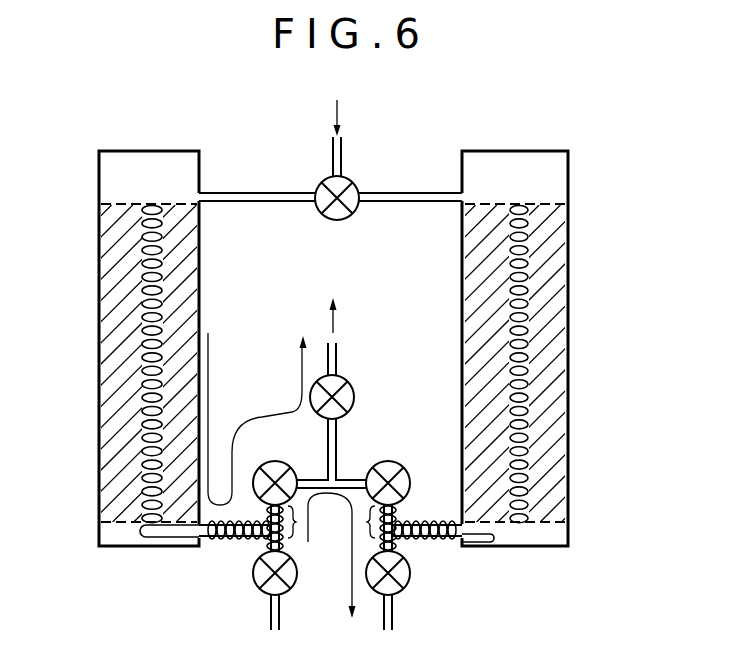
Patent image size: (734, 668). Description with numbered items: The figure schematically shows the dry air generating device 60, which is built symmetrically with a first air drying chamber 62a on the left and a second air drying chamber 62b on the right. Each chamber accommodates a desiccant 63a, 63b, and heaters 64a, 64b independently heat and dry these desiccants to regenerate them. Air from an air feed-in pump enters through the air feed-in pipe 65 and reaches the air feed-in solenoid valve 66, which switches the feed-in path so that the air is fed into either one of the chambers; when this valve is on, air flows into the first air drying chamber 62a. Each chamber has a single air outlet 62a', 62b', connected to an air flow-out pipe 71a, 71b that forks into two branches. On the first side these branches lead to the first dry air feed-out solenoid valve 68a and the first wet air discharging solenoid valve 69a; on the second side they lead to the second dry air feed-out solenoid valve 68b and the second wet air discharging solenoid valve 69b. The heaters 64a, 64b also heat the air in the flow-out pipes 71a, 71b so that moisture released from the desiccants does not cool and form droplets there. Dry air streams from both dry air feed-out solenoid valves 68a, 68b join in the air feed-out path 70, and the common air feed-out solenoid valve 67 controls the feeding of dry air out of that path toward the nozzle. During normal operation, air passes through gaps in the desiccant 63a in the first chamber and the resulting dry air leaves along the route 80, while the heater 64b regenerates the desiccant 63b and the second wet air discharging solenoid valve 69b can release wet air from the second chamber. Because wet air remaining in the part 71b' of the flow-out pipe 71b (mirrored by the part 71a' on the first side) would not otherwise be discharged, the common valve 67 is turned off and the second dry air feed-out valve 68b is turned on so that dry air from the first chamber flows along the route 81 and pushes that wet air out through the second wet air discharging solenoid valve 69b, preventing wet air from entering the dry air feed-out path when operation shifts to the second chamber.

The dry air generating device 60 is at (549, 120).
The first air drying chamber 62a is at (119, 332).
The second air drying chamber 62b is at (546, 348).
The air outlet 62a' is at (158, 560).
The air outlet 62b' is at (493, 564).
The desiccant 63a is at (104, 258).
The desiccant 63b is at (556, 262).
The heater 64a is at (150, 330).
The heater 64b is at (526, 292).
The air feed-in pipe 65 is at (343, 142).
The air feed-in solenoid valve 66 is at (358, 190).
The common air feed-out solenoid valve 67 is at (348, 388).
The first dry air feed-out solenoid valve 68a is at (273, 461).
The second dry air feed-out solenoid valve 68b is at (388, 461).
The first wet air discharging solenoid valve 69a is at (264, 585).
The second wet air discharging solenoid valve 69b is at (396, 586).
The air feed-out path 70 is at (337, 438).
The air flow-out pipe 71a is at (231, 554).
The air flow-out pipe 71b is at (428, 553).
The part of the air flow-out pipe 71a' is at (306, 535).
The part of the air flow-out pipe 71b' is at (348, 555).
The route 80 is at (296, 380).
The route 81 is at (352, 602).